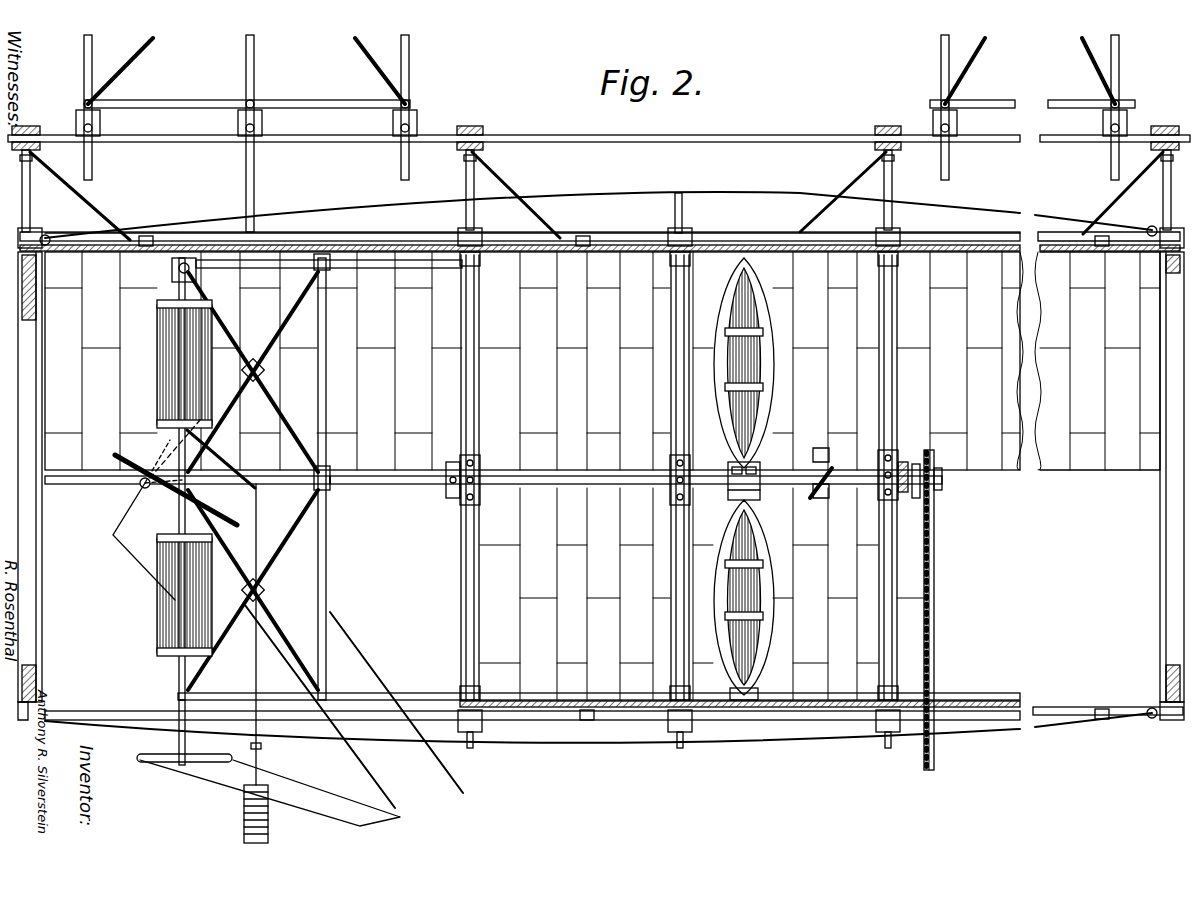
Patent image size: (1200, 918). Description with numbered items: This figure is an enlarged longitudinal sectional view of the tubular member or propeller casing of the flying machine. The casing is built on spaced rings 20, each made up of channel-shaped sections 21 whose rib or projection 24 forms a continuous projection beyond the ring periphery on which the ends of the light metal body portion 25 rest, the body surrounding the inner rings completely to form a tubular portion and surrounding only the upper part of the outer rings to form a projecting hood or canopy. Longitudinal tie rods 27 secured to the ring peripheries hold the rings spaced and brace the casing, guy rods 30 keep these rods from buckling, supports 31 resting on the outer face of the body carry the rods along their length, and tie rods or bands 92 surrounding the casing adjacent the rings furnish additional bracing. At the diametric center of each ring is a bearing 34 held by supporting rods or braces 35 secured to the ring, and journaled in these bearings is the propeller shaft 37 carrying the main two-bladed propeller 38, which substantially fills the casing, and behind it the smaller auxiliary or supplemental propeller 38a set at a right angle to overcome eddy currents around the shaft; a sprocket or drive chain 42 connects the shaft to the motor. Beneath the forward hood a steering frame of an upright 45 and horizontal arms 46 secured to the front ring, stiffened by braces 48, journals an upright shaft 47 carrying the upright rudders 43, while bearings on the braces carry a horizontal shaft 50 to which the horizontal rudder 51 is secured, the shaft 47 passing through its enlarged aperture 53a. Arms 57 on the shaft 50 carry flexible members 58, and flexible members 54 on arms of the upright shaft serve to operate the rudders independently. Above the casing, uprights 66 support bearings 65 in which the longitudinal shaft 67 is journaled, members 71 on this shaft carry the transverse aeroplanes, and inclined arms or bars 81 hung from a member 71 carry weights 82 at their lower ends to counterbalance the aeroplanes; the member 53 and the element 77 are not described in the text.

The spaced rings 20 is at (48, 598).
The sections 21 is at (725, 245).
The rib or projection 24 is at (690, 240).
The body portion 25 is at (740, 700).
The tie rods or bolts 27 is at (603, 231).
The guy rods 30 is at (677, 195).
The supports 31 is at (580, 250).
The bearing 34 is at (452, 495).
The supporting rods or braces 35 is at (462, 600).
The propeller shaft 37 is at (575, 490).
The propeller 38 is at (765, 350).
The auxiliary or supplemental propeller 38a is at (823, 455).
The sprocket or drive chain 42 is at (935, 700).
The upright aeroplanes or rudders 43 is at (158, 370).
The upright 45 is at (330, 515).
The horizontal arms 46 is at (370, 238).
The shaft 47 is at (176, 292).
The braces 48 is at (268, 350).
The horizontal shaft 50 is at (130, 490).
The horizontal aeroplane or rudder 51 is at (186, 515).
The arm 53 is at (177, 765).
The enlarged aperture or opening 53a is at (205, 475).
The flexible members 54 is at (273, 795).
The arms 57 is at (135, 496).
The flexible members 58 is at (355, 650).
The bearings 65 is at (35, 127).
The uprights 66 is at (50, 170).
The shaft 67 is at (740, 135).
The member 71 is at (98, 150).
The lever arm 77 is at (118, 72).
The arms or bars 81 is at (256, 190).
The weights 82 is at (244, 815).
The tie rods or bands 92 is at (462, 228).